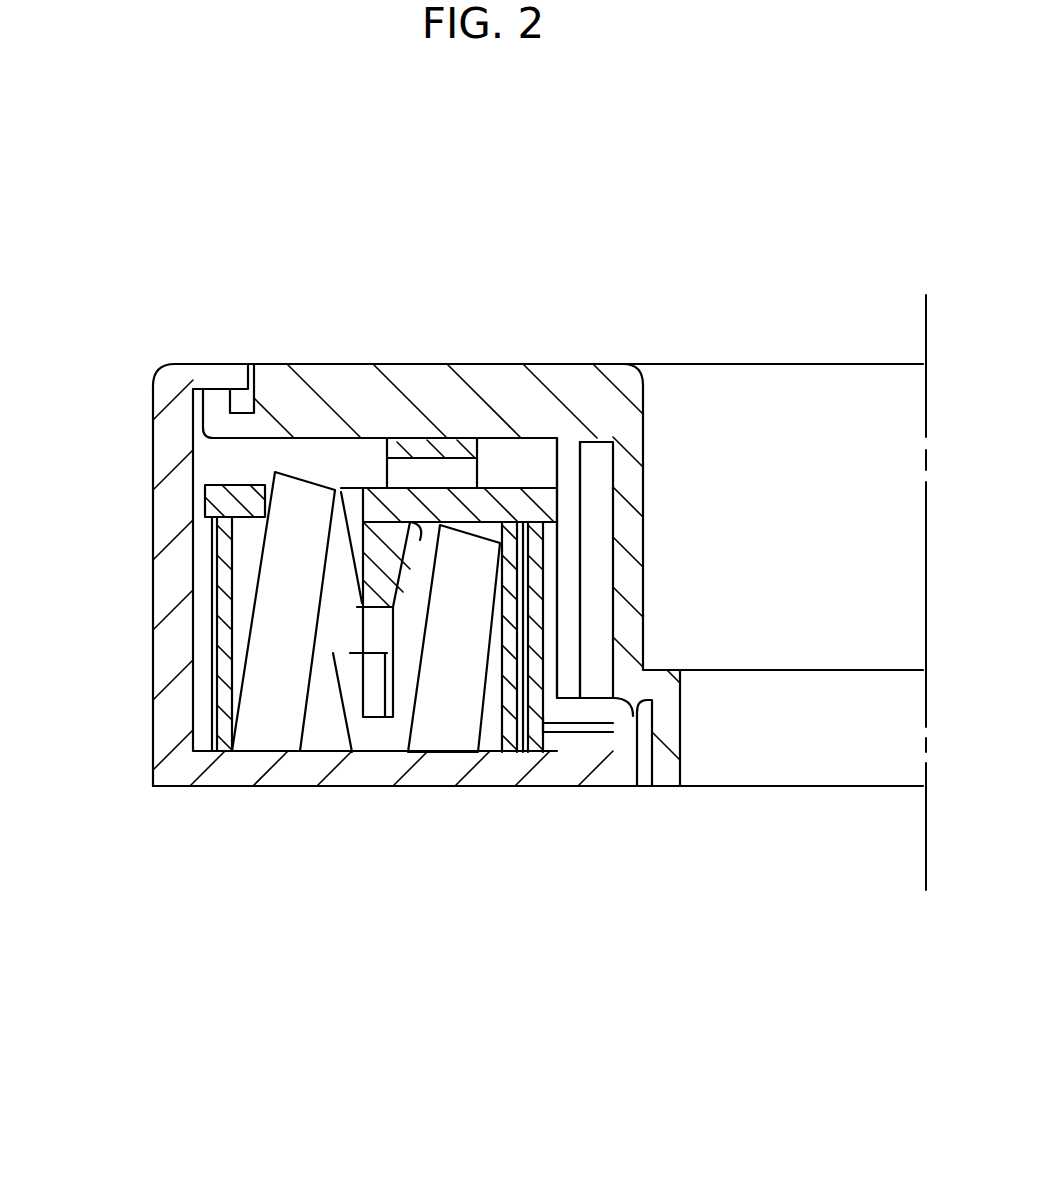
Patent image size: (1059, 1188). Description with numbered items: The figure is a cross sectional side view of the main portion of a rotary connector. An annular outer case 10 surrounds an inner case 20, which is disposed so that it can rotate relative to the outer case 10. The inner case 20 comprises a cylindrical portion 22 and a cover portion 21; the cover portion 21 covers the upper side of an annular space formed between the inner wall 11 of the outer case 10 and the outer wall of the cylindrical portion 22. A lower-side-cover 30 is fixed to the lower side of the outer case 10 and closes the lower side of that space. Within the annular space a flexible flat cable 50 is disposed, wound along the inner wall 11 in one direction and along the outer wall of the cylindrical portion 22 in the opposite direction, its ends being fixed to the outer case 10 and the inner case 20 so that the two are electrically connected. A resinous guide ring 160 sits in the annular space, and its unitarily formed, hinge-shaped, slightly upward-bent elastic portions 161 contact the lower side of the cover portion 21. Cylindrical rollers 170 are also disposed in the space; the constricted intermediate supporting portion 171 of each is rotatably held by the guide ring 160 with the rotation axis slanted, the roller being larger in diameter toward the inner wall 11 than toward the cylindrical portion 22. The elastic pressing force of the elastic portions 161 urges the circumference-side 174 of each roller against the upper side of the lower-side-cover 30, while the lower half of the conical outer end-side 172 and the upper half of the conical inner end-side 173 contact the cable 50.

The annular outer case 10 is at (175, 510).
The inner wall 11 is at (193, 587).
The inner case 20 is at (588, 414).
The cover portion 21 is at (552, 385).
The cylindrical portion 22 is at (570, 550).
The lower-side-cover 30 is at (605, 770).
The flexible flat cable 50 is at (217, 650).
The guide ring 160 is at (213, 500).
The elastic portions 161 is at (425, 475).
The cylindrical rollers 170 is at (344, 745).
The constricted intermediate supporting portion 171 is at (374, 635).
The outer end-side 172 is at (228, 710).
The inner end-side 173 is at (480, 727).
The circumference-side 174 is at (273, 730).